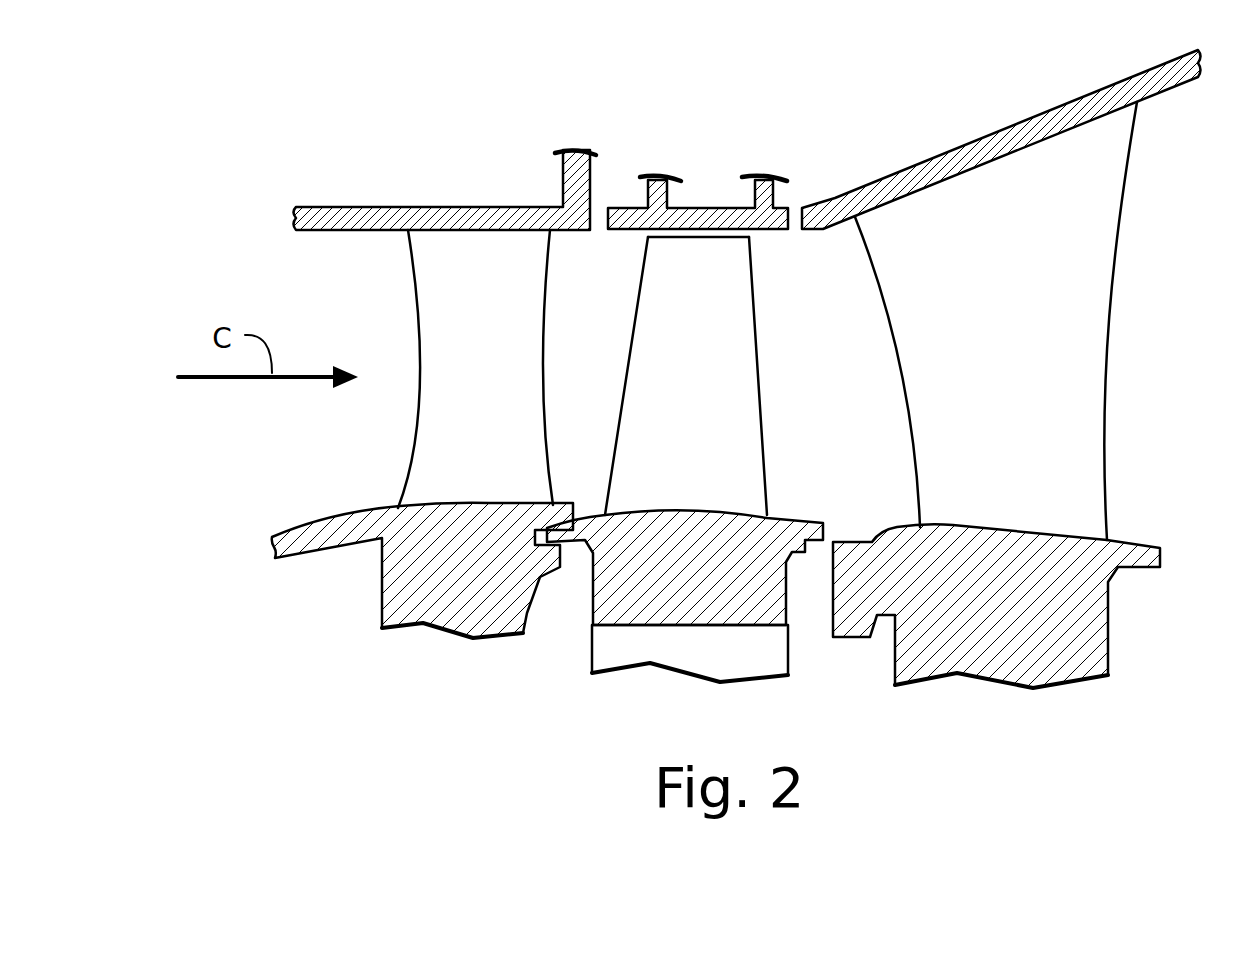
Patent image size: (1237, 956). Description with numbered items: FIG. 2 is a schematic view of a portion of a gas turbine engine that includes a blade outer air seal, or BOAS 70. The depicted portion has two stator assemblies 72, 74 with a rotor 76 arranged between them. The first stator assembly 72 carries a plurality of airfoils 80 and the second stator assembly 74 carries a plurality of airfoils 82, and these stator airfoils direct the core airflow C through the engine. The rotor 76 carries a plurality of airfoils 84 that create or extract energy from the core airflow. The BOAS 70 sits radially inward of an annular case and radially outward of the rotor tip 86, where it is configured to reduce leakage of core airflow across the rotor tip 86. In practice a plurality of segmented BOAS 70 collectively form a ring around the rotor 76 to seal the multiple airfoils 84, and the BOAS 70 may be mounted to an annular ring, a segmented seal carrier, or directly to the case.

The blade outer air seal (BOAS) 70 is at (777, 189).
The stator assembly 72 is at (382, 500).
The stator assembly 74 is at (1164, 496).
The rotor 76 is at (788, 645).
The airfoils 80 is at (465, 370).
The airfoils 82 is at (985, 322).
The airfoils 84 is at (678, 397).
The rotor tip 86 is at (697, 226).